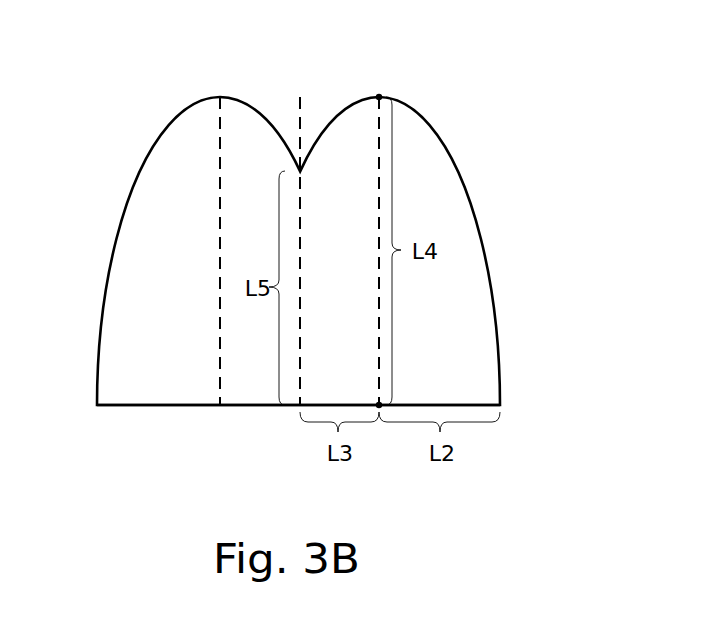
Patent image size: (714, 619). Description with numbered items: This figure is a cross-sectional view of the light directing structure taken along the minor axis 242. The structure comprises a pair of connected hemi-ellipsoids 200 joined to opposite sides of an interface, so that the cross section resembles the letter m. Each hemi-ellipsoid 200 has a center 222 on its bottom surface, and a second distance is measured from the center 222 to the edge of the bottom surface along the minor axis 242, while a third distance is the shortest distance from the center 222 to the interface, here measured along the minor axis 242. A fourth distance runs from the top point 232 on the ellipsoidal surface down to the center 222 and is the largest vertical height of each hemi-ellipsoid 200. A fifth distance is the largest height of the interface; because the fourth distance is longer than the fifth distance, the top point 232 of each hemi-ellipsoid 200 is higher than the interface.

The hemi-ellipsoid 200 is at (168, 122).
The top point 232 is at (381, 95).
The center 222 is at (380, 408).
The minor axis 242 is at (470, 405).